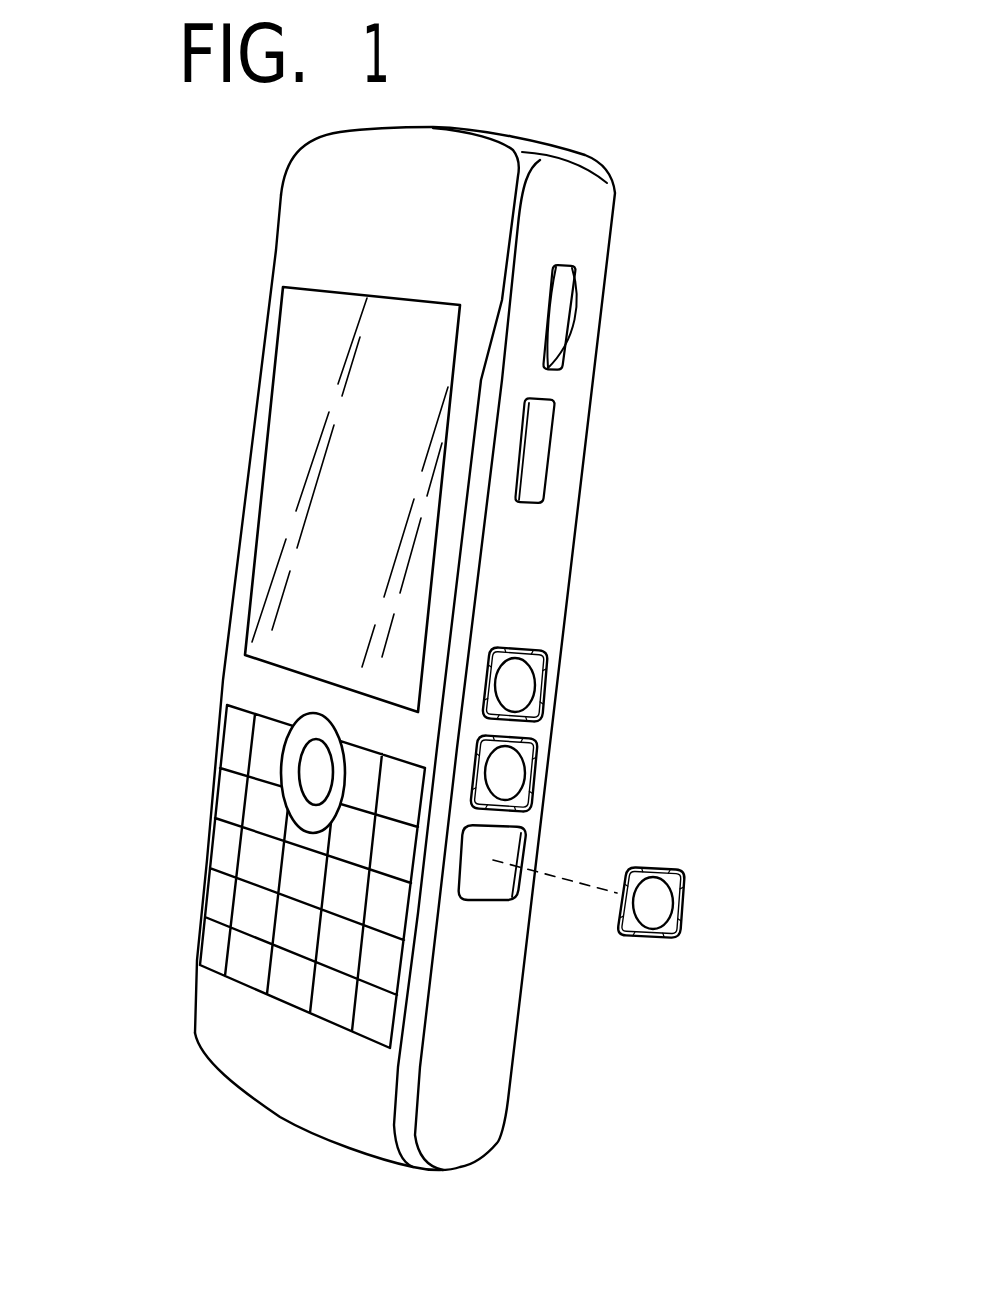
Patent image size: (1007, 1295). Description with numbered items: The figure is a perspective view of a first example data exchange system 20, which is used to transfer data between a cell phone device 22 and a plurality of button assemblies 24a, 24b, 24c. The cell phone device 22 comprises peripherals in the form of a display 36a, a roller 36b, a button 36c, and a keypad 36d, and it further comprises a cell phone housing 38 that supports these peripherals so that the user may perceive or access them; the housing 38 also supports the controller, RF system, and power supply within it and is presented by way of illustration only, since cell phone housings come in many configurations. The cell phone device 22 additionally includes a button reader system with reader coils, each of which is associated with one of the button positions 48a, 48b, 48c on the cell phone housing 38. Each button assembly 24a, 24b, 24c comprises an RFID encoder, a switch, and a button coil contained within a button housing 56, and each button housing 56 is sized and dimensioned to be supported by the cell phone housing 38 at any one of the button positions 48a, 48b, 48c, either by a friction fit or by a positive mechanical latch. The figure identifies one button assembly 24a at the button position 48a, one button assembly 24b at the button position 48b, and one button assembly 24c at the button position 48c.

The data exchange system 20 is at (677, 200).
The cell phone device 22 is at (310, 238).
The button assembly 24a is at (527, 687).
The button assembly 24b is at (515, 777).
The button assembly 24c is at (662, 903).
The display 36a is at (290, 417).
The roller 36b is at (567, 328).
The button 36c is at (537, 465).
The keypad 36d is at (217, 882).
The cell phone housing 38 is at (483, 1032).
The button position 48a is at (545, 717).
The button position 48b is at (530, 808).
The button position 48c is at (490, 887).
The button housing 56 is at (540, 660).